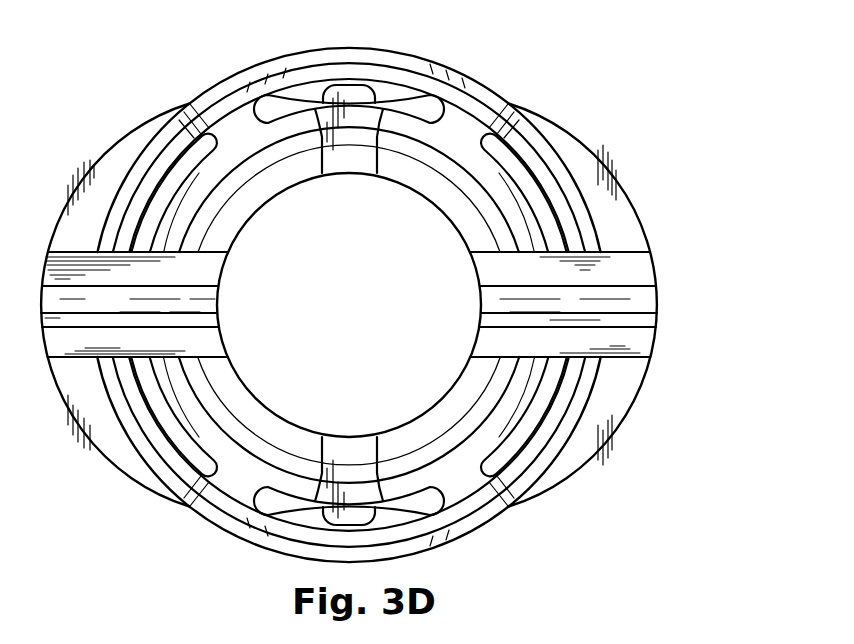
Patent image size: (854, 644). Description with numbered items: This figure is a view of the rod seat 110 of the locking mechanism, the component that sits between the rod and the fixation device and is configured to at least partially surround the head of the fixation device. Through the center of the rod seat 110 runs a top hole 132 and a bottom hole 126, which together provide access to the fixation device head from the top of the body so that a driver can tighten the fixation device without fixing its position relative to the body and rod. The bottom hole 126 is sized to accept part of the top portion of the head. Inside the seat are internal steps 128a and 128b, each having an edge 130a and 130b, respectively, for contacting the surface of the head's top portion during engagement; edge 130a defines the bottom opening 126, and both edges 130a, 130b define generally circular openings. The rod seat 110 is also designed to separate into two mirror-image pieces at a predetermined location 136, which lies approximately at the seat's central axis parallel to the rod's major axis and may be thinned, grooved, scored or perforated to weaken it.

The rod seat 110 is at (503, 81).
The bottom hole 126 is at (268, 463).
The internal step 128a is at (510, 183).
The internal step 128b is at (517, 147).
The edge 130a is at (532, 230).
The edge 130b is at (552, 203).
The top hole 132 is at (308, 227).
The predetermined location 136 is at (630, 302).